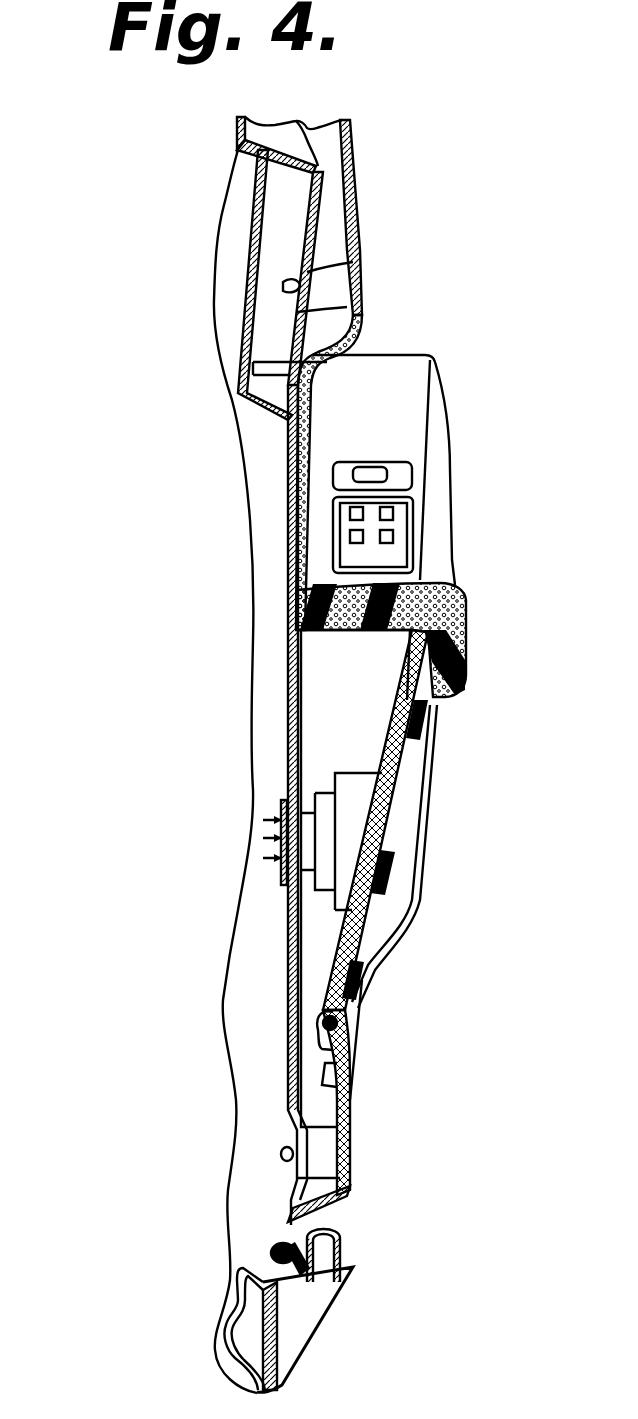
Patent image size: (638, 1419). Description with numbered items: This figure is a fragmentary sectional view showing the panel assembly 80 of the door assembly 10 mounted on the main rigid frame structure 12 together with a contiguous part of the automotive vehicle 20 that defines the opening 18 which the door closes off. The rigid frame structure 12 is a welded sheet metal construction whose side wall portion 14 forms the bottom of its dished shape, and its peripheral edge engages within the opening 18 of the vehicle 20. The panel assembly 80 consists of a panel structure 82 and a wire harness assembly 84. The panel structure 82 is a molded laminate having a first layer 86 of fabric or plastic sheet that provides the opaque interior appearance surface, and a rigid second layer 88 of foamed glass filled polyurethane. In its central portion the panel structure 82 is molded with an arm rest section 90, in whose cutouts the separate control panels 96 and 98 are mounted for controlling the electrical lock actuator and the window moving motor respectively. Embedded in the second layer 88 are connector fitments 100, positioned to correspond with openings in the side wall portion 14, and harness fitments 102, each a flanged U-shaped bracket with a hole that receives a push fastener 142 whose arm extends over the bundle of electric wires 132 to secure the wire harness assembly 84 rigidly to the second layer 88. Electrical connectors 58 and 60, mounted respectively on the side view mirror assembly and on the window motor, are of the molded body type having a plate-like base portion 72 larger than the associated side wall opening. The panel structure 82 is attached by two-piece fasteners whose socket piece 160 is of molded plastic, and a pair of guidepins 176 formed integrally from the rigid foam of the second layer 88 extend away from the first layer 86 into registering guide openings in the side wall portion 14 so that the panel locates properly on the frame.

The door assembly 10 is at (378, 152).
The main rigid frame structure 12 is at (229, 131).
The side wall portion 14 is at (287, 1003).
The opening 18 is at (292, 1290).
The automotive vehicle 20 is at (283, 1352).
The electrical connector 58 is at (263, 858).
The electrical connector 60 is at (273, 805).
The plate-like base portion 72 is at (283, 878).
The panel assembly 80 is at (487, 573).
The panel structure 82 is at (398, 833).
The wire harness assembly 84 is at (391, 718).
The first layer 86 is at (427, 733).
The second layer 88 is at (358, 633).
The arm rest section 90 is at (403, 423).
The control panel 96 is at (407, 490).
The control panel 98 is at (403, 547).
The connector fitment 100 is at (316, 789).
The harness fitment 102 is at (337, 1087).
The electric wires 132 is at (337, 1033).
The push fastener 142 is at (320, 1037).
The socket piece 160 is at (279, 286).
The guidepin 176 is at (254, 369).